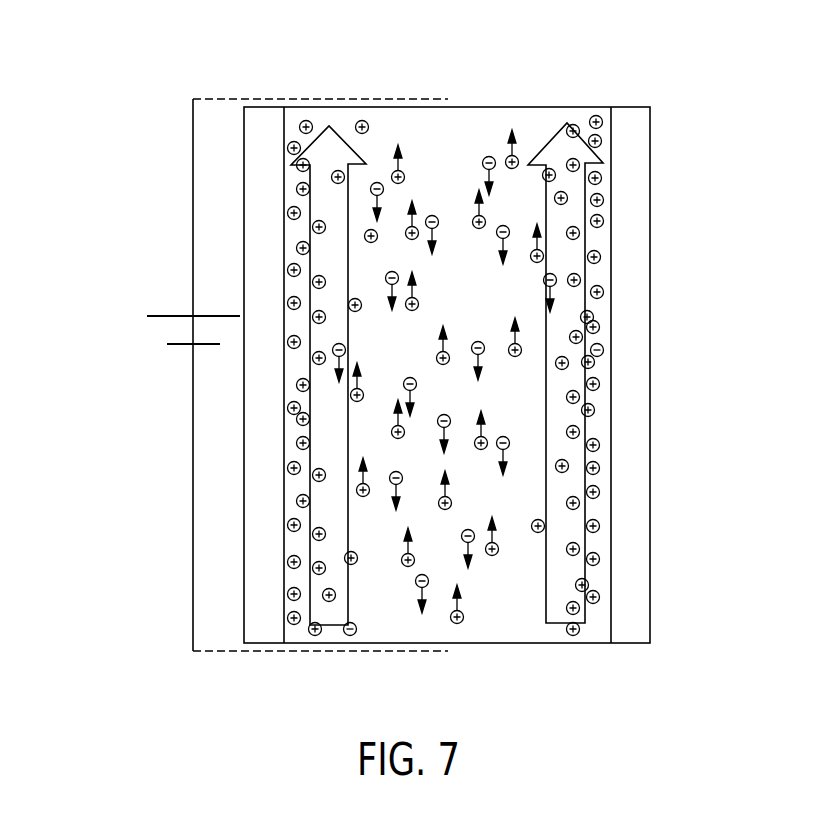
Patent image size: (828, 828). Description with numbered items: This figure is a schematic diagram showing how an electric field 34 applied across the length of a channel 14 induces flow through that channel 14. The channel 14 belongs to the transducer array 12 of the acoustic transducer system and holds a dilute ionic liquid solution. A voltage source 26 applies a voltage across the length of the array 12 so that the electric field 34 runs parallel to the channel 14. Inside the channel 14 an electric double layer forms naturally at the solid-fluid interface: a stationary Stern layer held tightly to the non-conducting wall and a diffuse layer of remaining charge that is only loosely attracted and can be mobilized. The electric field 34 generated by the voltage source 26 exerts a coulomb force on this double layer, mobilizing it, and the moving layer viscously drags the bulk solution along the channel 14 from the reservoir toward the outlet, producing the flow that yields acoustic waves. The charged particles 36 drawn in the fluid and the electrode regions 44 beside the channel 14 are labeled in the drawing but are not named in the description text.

The transducer array 12 is at (213, 80).
The channel 14 is at (500, 623).
The voltage source 26 is at (108, 393).
The electric field 34 is at (320, 520).
The charged particles / ions 36 is at (479, 229).
The electrodes 44 is at (263, 182).